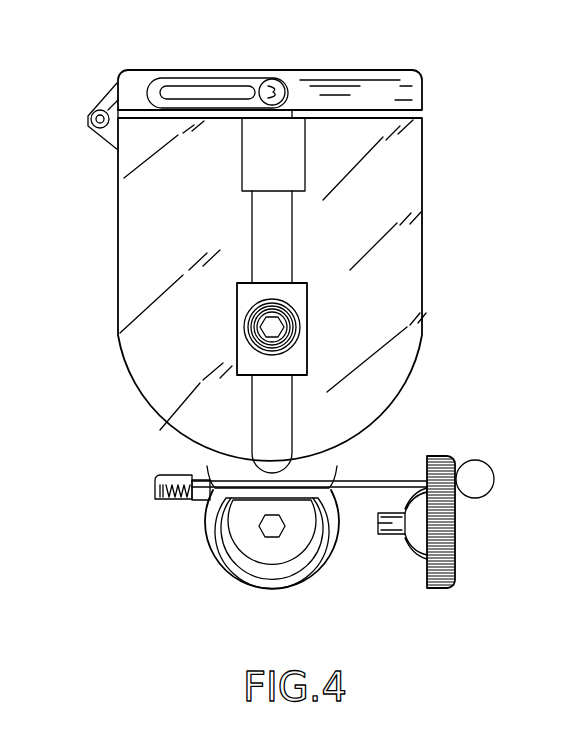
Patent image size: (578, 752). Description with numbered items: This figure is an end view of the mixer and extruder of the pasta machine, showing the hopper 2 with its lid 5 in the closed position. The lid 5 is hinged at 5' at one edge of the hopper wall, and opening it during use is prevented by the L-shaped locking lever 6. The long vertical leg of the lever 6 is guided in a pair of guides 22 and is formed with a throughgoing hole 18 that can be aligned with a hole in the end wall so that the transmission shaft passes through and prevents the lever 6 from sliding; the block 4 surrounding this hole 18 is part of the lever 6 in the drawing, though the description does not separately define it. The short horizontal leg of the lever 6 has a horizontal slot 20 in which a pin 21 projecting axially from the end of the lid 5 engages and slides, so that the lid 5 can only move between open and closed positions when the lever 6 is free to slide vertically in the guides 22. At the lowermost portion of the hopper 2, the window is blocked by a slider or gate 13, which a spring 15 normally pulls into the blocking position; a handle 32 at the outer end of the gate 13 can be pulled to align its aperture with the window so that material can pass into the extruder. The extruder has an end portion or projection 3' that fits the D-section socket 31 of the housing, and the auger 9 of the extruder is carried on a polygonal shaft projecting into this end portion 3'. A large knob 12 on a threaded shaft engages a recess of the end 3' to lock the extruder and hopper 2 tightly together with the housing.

The hopper 2 is at (423, 145).
The lid 5 is at (315, 86).
The hinge 5' is at (90, 133).
The horizontal slot 20 is at (195, 90).
The pin 21 is at (273, 86).
The guides 22 is at (247, 292).
The locking lever 6 is at (283, 250).
The slide block 4 is at (270, 325).
The throughgoing hole 18 is at (248, 333).
The gate 13 is at (368, 475).
The spring 15 is at (180, 500).
The D-section socket 31 is at (226, 560).
The projection 3' is at (284, 551).
The auger 9 is at (277, 530).
The knob 12 is at (455, 540).
The handle 32 is at (479, 477).